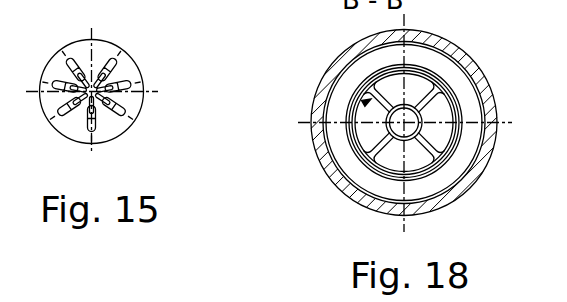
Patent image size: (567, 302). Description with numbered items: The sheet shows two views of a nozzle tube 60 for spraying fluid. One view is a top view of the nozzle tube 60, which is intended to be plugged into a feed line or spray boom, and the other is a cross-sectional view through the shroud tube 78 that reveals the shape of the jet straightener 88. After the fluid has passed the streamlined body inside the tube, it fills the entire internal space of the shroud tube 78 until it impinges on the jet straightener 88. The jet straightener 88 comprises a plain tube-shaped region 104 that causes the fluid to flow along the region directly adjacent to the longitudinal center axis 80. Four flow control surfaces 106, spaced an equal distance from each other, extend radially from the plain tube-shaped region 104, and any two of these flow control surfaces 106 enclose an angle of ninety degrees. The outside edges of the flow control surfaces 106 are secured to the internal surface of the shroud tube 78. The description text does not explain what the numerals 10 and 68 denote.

In FIG. 18, the nozzle assembly 10 is at (401, 119).
In FIG. 15, the nozzle tube 60 is at (150, 76).
In FIG. 18, the housing 68 is at (566, 136).
In FIG. 18, the shroud tube 78 is at (345, 160).
In FIG. 18, the longitudinal center axis 80 is at (415, 103).
In FIG. 18, the jet straightener 88 is at (363, 103).
In FIG. 18, the plain tube-shaped region 104 is at (433, 172).
In FIG. 18, the flow control surfaces 106 is at (378, 148).